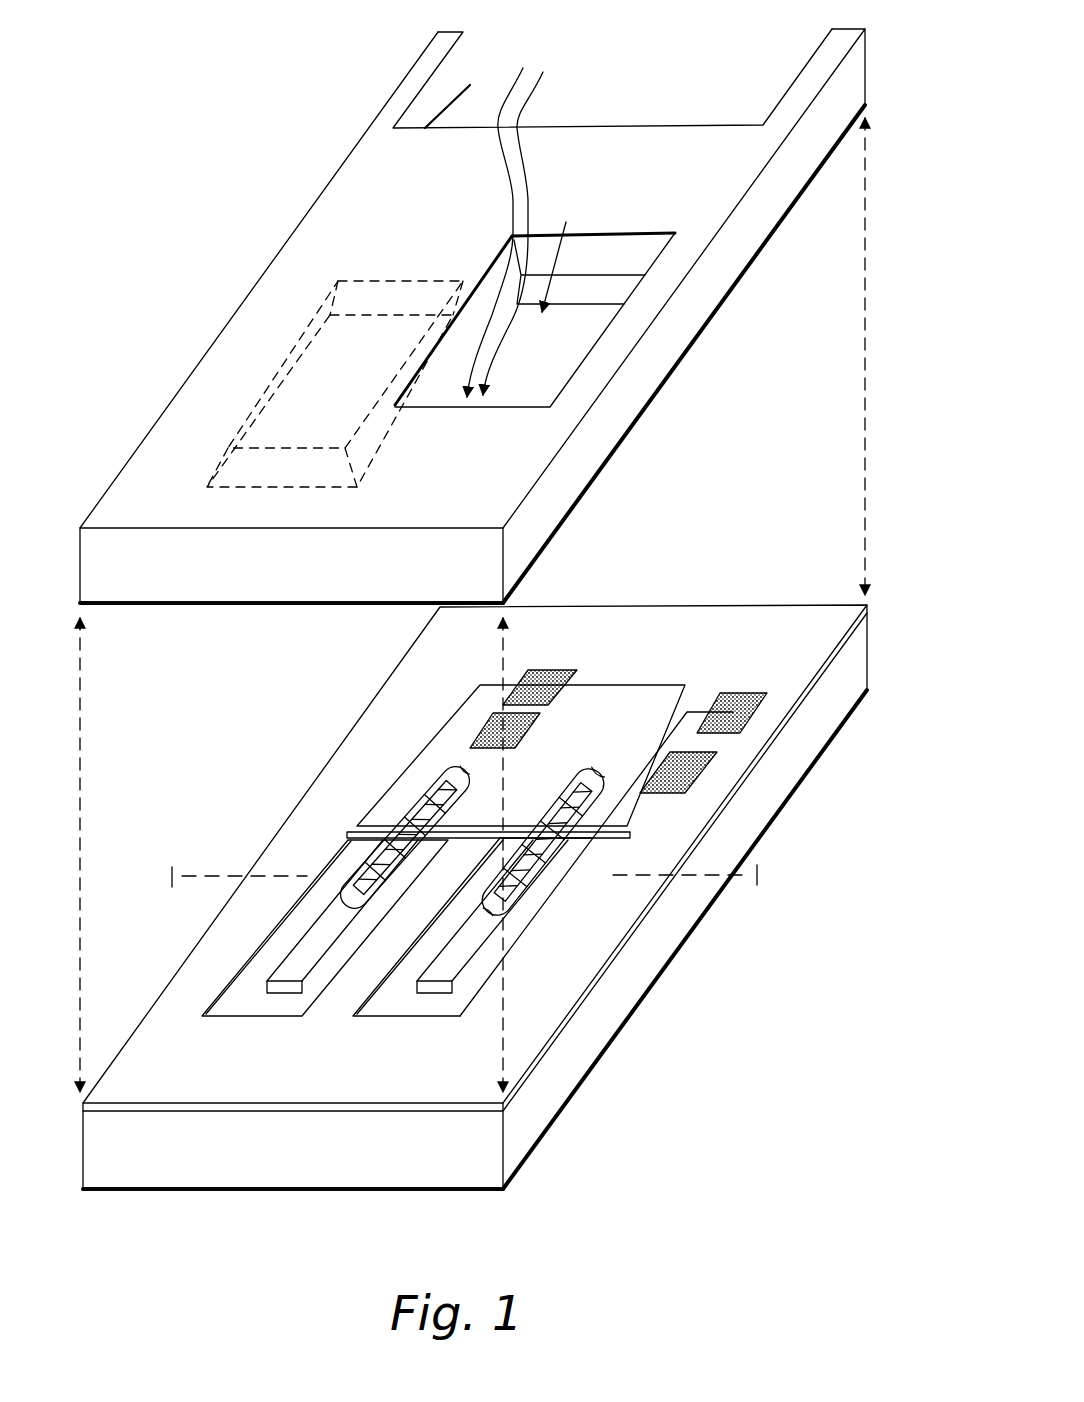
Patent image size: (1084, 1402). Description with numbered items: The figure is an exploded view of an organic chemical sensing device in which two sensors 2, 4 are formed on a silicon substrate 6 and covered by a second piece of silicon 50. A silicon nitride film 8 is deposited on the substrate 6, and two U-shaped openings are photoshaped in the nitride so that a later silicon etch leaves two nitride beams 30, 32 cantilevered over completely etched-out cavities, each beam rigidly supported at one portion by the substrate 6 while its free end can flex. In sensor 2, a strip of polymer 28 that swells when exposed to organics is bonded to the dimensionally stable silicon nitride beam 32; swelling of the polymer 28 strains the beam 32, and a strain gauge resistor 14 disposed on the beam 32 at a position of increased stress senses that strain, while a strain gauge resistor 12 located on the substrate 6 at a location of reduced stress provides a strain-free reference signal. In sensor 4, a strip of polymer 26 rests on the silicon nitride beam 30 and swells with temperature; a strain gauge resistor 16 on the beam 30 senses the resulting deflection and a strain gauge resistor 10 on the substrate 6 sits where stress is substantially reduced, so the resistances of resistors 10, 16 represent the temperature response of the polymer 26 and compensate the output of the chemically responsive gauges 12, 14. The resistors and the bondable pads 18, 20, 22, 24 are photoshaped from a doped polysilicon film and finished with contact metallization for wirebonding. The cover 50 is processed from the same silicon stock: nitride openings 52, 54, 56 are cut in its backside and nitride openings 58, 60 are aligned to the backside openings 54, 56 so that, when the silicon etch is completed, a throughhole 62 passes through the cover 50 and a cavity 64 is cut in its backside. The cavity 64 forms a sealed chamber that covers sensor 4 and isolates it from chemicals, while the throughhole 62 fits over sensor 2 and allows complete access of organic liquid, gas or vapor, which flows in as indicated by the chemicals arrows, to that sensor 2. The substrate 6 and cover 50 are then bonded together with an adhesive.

The sensor 2 is at (525, 915).
The sensor 4 is at (368, 918).
The silicon substrate 6 is at (870, 650).
The silicon nitride film 8 is at (868, 606).
The strain gauge resistor 10 is at (452, 800).
The strain gauge resistor 12 is at (565, 790).
The strain gauge resistor 14 is at (555, 870).
The strain gauge resistor 16 is at (398, 870).
The pad 18 is at (492, 722).
The pad 20 is at (548, 670).
The pad 22 is at (665, 794).
The pad 24 is at (733, 688).
The strip of polymer 26 is at (443, 762).
The strip of polymer 28 is at (597, 765).
The silicon nitride beam 30 is at (277, 968).
The silicon nitride beam 32 is at (360, 1016).
The second piece of silicon 50 is at (868, 62).
The nitride opening 52 is at (287, 487).
The nitride opening 54 is at (563, 304).
The nitride opening 56 is at (473, 90).
The nitride opening 58 is at (606, 233).
The nitride opening 60 is at (478, 34).
The throughhole 62 is at (566, 222).
The cavity 64 is at (283, 407).